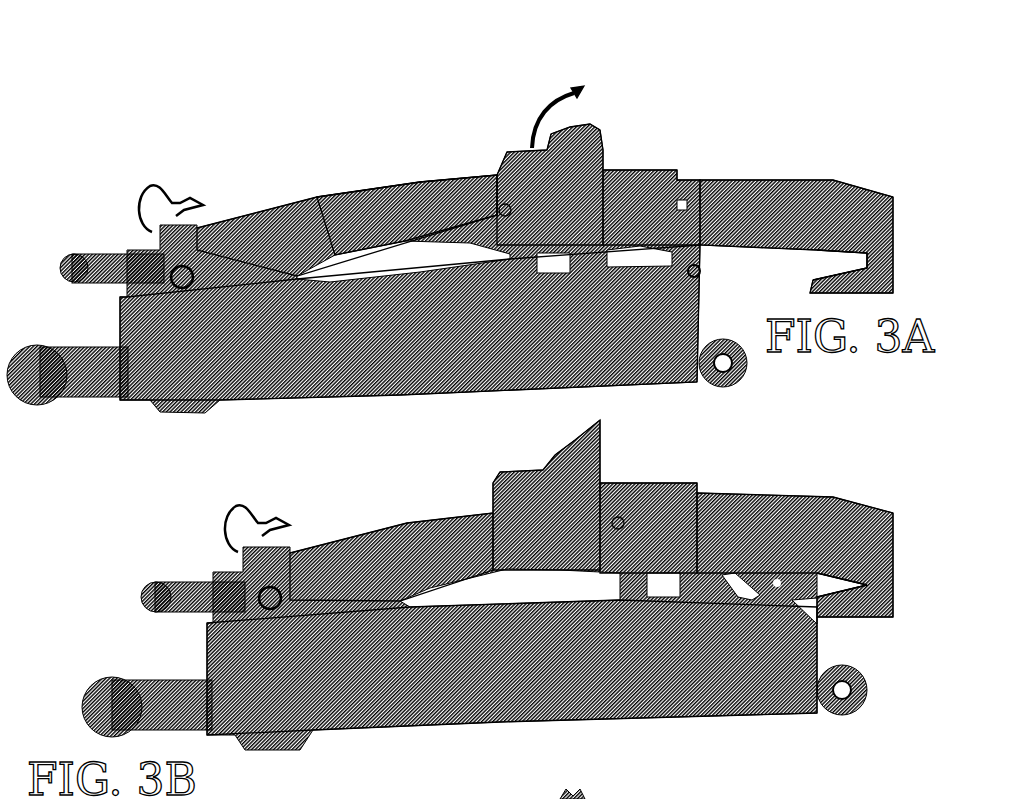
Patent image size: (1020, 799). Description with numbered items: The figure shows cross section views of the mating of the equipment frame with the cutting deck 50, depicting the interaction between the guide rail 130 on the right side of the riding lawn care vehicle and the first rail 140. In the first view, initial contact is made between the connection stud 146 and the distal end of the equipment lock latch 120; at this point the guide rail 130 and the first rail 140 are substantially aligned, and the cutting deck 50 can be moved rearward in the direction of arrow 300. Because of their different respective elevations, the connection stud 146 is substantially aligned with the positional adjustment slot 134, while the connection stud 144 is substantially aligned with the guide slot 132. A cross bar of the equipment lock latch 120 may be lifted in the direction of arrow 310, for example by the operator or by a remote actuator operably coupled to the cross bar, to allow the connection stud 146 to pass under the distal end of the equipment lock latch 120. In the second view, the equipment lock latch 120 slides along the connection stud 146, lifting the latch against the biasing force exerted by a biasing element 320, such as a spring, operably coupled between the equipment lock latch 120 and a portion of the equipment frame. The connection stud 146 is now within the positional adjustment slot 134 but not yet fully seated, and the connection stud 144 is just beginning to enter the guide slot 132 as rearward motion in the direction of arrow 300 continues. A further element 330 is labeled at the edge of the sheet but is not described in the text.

In FIG. 3A, the cutting deck 50 is at (450, 306).
In FIG. 3B, the cutting deck 50 is at (112, 654).
In FIG. 3A, the equipment lock latch 120 is at (484, 170).
In FIG. 3B, the equipment lock latch 120 is at (550, 480).
In FIG. 3A, the guide rail 130 is at (796, 209).
In FIG. 3B, the guide rail 130 is at (795, 533).
In FIG. 3A, the guide slot 132 is at (840, 265).
In FIG. 3B, the guide slot 132 is at (854, 605).
In FIG. 3A, the positional adjustment slot 134 is at (492, 209).
In FIG. 3B, the positional adjustment slot 134 is at (489, 514).
In FIG. 3A, the first rail 140 is at (347, 211).
In FIG. 3A, the connection stud 144 is at (768, 331).
In FIG. 3A, the connection stud 146 is at (508, 201).
In FIG. 3B, the connection stud 146 is at (655, 474).
In FIG. 3A, the arrow 300 is at (410, 334).
In FIG. 3B, the arrow 300 is at (512, 667).
In FIG. 3A, the arrow 310 is at (537, 117).
In FIG. 3A, the biasing element 320 is at (651, 207).
In FIG. 3B, the biasing element 320 is at (657, 514).
In FIG. 3B, the coupler 330 is at (669, 785).